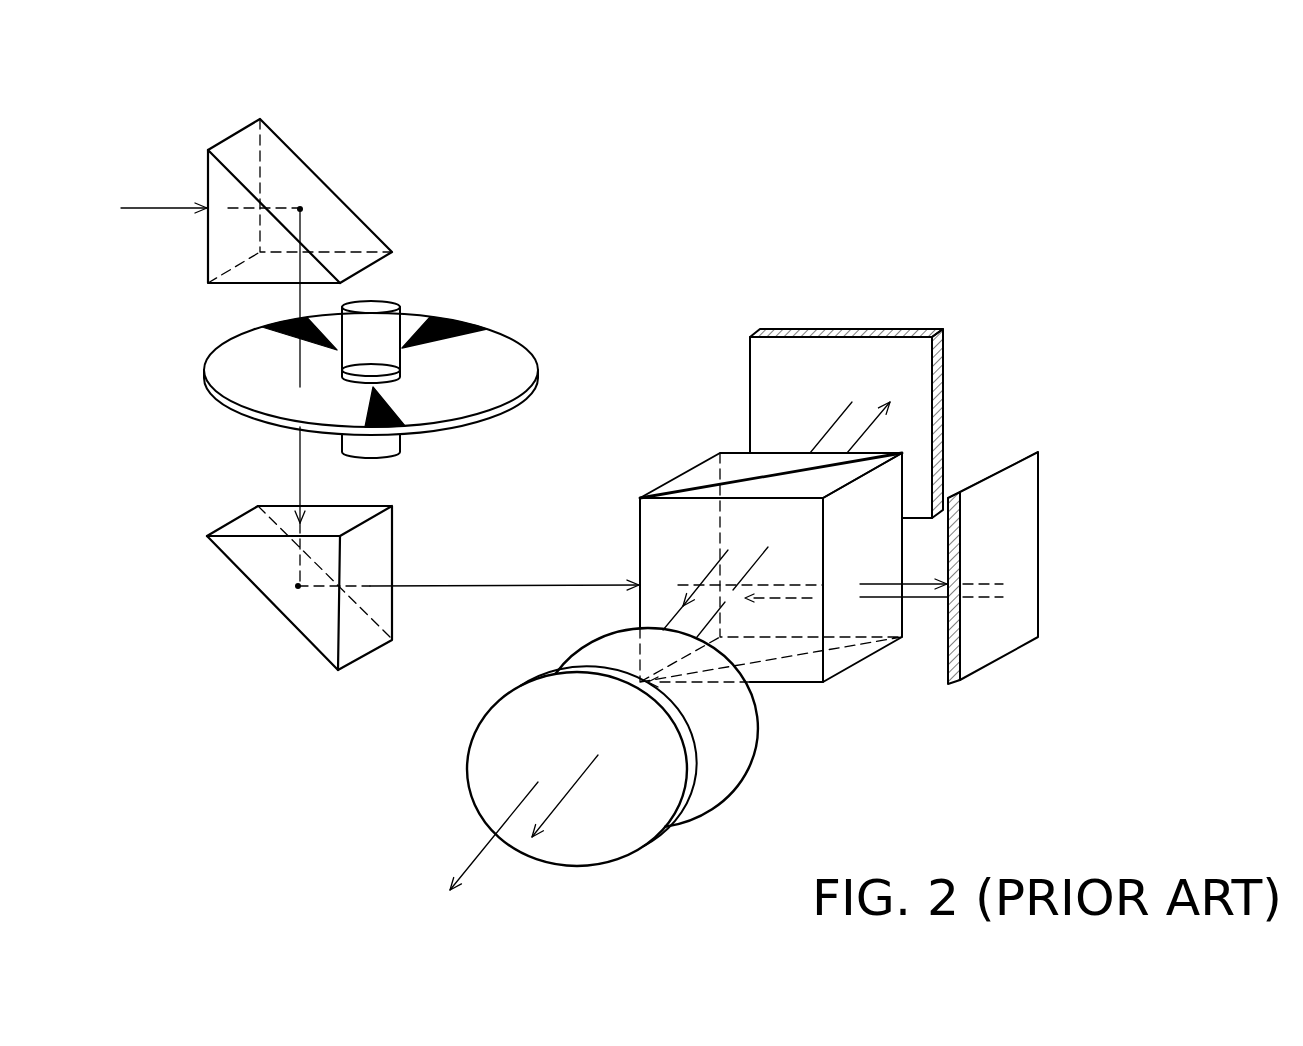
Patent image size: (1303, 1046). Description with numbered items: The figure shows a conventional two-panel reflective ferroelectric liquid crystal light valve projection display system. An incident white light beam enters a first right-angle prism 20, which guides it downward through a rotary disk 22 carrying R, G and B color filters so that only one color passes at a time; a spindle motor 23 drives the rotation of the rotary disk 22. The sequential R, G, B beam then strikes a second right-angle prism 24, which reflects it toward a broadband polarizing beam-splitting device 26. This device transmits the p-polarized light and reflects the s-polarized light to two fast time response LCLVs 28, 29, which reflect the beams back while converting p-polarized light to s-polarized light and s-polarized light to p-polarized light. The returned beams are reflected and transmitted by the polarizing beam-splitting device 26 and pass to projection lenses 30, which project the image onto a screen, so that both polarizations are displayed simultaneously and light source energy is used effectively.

The first right-angle prism 20 is at (298, 177).
The rotary disk 22 is at (247, 413).
The spindle motor 23 is at (380, 307).
The second right-angle prism 24 is at (265, 582).
The broadband polarizing beam-splitting device 26 is at (737, 465).
The fast time response LCLV 28 is at (882, 328).
The fast time response LCLV 29 is at (990, 667).
The projection lenses 30 is at (703, 808).